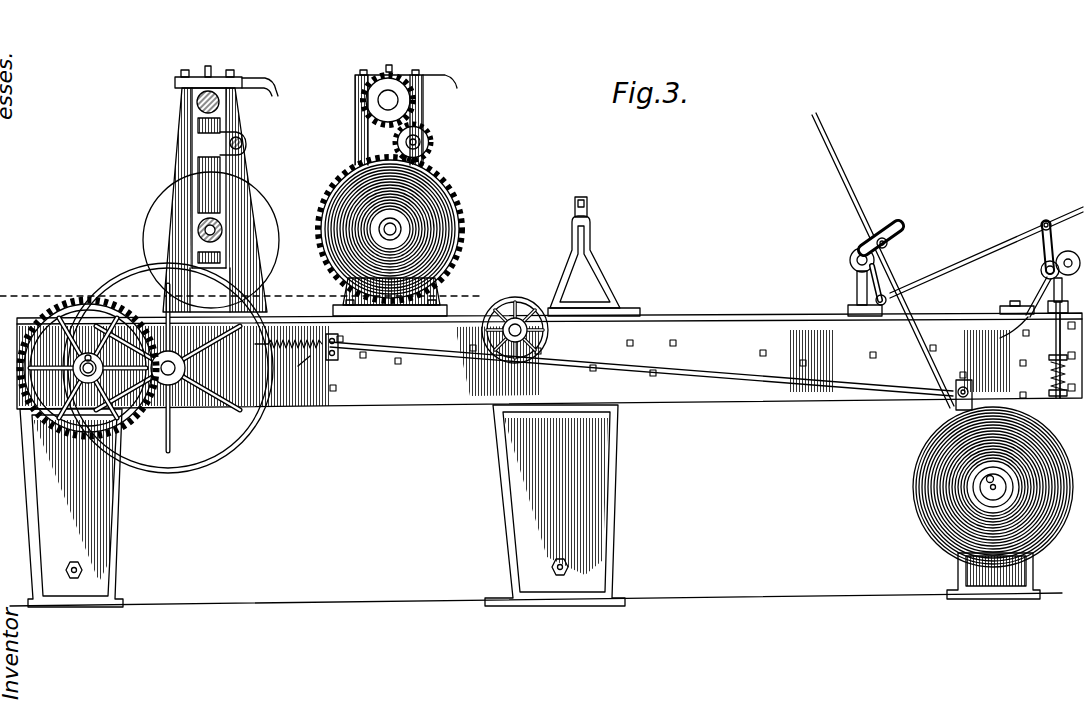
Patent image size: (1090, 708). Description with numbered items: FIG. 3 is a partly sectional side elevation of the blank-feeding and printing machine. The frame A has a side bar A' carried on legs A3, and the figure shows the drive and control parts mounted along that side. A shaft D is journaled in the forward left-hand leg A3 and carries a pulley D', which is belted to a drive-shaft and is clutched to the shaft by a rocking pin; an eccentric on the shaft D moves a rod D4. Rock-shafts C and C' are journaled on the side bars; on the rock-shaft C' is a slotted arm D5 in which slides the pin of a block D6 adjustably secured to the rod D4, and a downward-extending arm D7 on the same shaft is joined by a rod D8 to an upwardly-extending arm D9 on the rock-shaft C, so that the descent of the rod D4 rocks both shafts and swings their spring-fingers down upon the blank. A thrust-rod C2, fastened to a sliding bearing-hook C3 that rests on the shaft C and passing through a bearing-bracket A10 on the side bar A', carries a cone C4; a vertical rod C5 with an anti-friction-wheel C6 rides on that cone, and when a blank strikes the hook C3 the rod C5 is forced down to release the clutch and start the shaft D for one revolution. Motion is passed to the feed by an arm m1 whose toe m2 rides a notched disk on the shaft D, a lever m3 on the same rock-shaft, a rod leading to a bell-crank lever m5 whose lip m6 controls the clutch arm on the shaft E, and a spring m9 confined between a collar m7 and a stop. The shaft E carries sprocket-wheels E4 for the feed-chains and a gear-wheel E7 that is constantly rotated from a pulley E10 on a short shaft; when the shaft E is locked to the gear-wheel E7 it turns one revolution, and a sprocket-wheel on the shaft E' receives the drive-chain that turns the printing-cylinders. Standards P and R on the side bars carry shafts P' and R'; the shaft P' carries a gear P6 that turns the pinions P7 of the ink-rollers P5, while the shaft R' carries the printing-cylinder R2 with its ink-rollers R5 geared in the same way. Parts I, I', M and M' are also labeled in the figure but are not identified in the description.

The frame A is at (728, 285).
The side bar A' is at (549, 379).
The legs A3 is at (117, 530).
The bearing-bracket A10 is at (991, 302).
The shaft E is at (159, 368).
The shaft E' is at (88, 368).
The sprocket-wheels E4 is at (185, 370).
The gear-wheel E7 is at (55, 307).
The pulley E10 is at (118, 277).
The rear cheeks or standards R is at (222, 189).
The shaft R' is at (250, 214).
The printing-cylinder R2 is at (145, 222).
The ink-rollers R5 is at (200, 108).
The forward cheeks or standards P is at (384, 190).
The shaft P' is at (429, 202).
The ink-rollers P5 is at (378, 104).
The gear P6 is at (464, 234).
The pinions P7 is at (430, 135).
The pulley I is at (504, 326).
The pulley shaft I' is at (504, 276).
The standard M is at (594, 266).
The bearing on standard M' is at (606, 218).
The downward-extending arm m1 is at (300, 340).
The toe m2 is at (772, 378).
The arm or lever m3 is at (957, 404).
The bell-crank lever m5 is at (136, 412).
The laterally-extending lip m6 is at (100, 320).
The collar m7 is at (299, 372).
The spring m9 is at (330, 333).
The shaft D is at (975, 487).
The pulley D' is at (1074, 521).
The rod D4 is at (843, 168).
The arm D5 is at (885, 225).
The block D6 is at (860, 243).
The downward-extending arm D7 is at (885, 268).
The rod D8 is at (984, 254).
The upwardly-extending arm D9 is at (1030, 245).
The rock-shaft C is at (1069, 246).
The rock-shaft C' is at (846, 276).
The thrust-rod C2 is at (1032, 290).
The sliding bearing-hook C3 is at (1040, 287).
The cone C4 is at (995, 378).
The vertical rod C5 is at (1040, 343).
The anti-friction-wheel C6 is at (1003, 329).